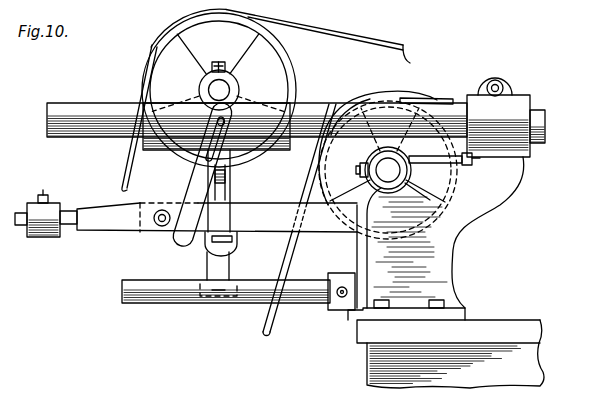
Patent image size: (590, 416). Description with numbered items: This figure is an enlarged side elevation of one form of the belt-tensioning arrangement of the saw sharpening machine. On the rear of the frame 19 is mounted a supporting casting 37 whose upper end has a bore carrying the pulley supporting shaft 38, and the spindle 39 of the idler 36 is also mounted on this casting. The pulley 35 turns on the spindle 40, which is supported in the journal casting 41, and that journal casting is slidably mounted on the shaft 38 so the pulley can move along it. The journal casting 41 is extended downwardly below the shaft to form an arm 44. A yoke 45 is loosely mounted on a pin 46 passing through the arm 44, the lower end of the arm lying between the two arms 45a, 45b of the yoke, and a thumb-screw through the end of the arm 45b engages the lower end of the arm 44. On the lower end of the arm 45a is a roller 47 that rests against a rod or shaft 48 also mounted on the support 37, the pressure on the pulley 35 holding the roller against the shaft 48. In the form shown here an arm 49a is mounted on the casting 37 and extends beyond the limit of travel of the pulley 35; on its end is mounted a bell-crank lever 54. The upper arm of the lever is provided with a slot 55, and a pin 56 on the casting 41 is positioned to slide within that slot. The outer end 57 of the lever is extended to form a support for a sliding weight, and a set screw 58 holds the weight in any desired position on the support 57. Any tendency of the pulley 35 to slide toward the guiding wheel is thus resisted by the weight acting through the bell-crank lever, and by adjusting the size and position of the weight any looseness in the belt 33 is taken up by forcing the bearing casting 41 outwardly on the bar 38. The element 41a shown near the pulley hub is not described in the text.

The frame 19 is at (495, 367).
The belt 33 is at (410, 97).
The pulley 35 is at (282, 69).
The idler 36 is at (360, 167).
The supporting casting 37 is at (446, 221).
The pulley supporting shaft 38 is at (318, 117).
The spindle 39 is at (391, 173).
The spindle 40 is at (214, 90).
The journal casting 41 is at (156, 108).
The collar 41a is at (235, 92).
The arm 44 is at (240, 150).
The yoke 45 is at (258, 218).
The arm of yoke 45a is at (230, 266).
The arm of yoke 45b is at (170, 226).
The pin 46 is at (236, 243).
The roller 47 is at (222, 296).
The rod or shaft 48 is at (160, 290).
The arm 49a is at (232, 176).
The bell-crank lever 54 is at (182, 196).
The slot 55 is at (190, 148).
The pin 56 is at (46, 224).
The end of lever 57 is at (22, 213).
The set screw 58 is at (46, 195).